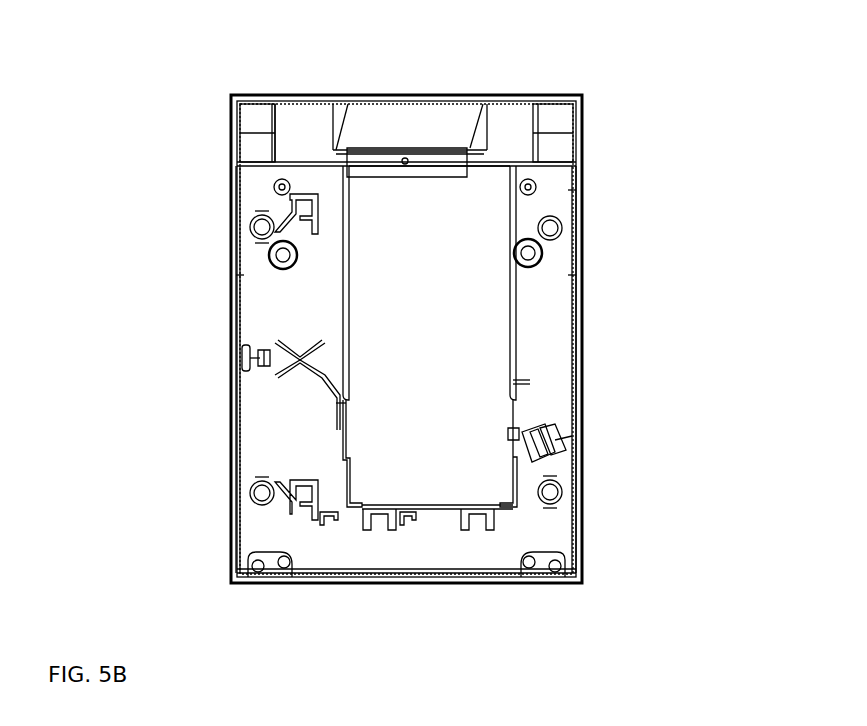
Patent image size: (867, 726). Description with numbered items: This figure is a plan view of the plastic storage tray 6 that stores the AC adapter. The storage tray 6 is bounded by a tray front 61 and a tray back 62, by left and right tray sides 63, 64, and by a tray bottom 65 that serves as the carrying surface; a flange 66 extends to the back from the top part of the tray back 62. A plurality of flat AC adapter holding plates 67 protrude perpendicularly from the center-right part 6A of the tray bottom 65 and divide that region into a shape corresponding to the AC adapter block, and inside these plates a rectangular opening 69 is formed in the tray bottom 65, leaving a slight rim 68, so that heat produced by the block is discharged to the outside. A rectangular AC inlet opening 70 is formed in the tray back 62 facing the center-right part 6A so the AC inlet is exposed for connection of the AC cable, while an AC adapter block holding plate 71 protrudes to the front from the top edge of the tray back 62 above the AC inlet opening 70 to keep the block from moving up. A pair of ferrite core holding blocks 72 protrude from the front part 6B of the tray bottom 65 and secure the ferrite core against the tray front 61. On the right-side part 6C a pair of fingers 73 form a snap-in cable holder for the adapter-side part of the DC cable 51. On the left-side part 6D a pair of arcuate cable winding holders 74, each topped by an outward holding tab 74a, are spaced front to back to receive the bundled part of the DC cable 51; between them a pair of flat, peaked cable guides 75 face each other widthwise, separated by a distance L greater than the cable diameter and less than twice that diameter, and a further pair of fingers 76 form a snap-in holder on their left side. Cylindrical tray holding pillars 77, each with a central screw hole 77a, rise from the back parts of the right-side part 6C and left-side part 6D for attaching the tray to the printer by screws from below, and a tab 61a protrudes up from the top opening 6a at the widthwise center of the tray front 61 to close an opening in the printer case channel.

The storage tray 6 is at (600, 100).
The center-right part 6A is at (450, 246).
The front part 6B is at (452, 541).
The right-side part 6C is at (580, 322).
The left-side part 6D is at (262, 300).
The top opening 6a is at (545, 325).
The DC cable 51 is at (412, 527).
The tray front 61 is at (572, 583).
The tab 61a is at (398, 580).
The tray back 62 is at (350, 168).
The left tray side 63 is at (232, 410).
The right tray side 64 is at (578, 442).
The tray bottom 65 is at (572, 185).
The flange 66 is at (505, 115).
The AC adapter holding plate 67 is at (343, 215).
The rim 68 is at (578, 197).
The opening 69 is at (429, 283).
The AC inlet opening 70 is at (465, 150).
The AC adapter block holding plate 71 is at (424, 160).
The ferrite core holding block 72 is at (328, 527).
The finger 73 is at (548, 460).
The cable winding holder 74 is at (290, 205).
The holding tab 74a is at (275, 185).
The cable guide 75 is at (330, 345).
The finger 76 is at (258, 378).
The tray holding pillar 77 is at (270, 265).
The screw hole 77a is at (255, 243).
The distance L is at (352, 425).